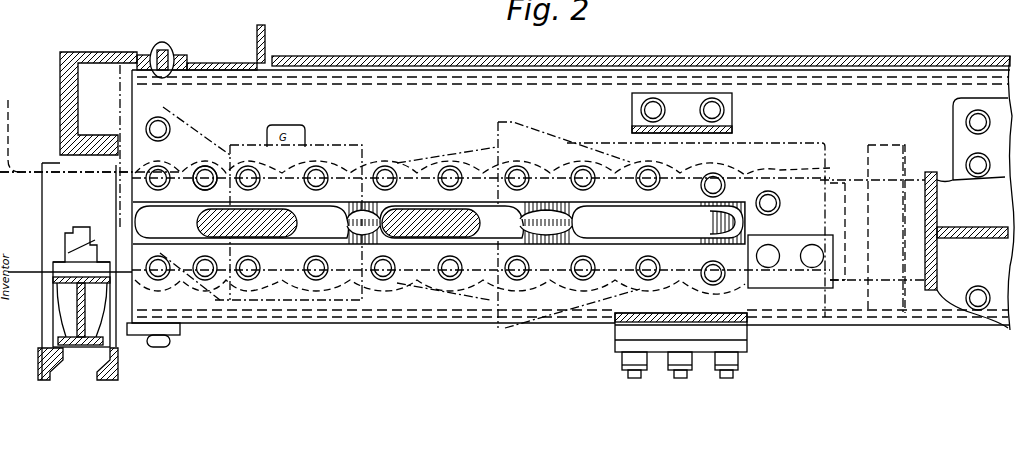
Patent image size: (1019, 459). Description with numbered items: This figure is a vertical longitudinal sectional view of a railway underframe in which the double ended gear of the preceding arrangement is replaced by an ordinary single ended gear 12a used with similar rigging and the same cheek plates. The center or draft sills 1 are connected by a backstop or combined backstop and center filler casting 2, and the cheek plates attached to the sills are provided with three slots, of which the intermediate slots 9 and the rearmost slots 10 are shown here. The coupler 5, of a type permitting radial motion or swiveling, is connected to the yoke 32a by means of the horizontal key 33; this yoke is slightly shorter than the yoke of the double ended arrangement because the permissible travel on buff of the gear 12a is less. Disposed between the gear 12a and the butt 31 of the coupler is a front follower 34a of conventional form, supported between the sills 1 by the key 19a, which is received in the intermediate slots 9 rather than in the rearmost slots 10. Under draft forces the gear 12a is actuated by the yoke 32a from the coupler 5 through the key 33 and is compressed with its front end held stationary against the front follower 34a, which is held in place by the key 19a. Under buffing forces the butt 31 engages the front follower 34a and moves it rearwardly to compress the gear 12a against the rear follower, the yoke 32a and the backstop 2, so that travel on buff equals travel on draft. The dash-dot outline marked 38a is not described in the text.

The center or draft sills 1 is at (383, 323).
The backstop or combined backstop and center filler casting 2 is at (957, 263).
The coupler 5 is at (21, 180).
The intermediate slots 9 is at (483, 212).
The rearmost slots 10 is at (673, 222).
The single ended gear 12a is at (553, 150).
The key 19a is at (427, 228).
The butt of the coupler 31 is at (200, 170).
The yoke 32a is at (917, 180).
The horizontal key 33 is at (272, 217).
The front follower 34a is at (427, 163).
The stop member 38a is at (885, 152).